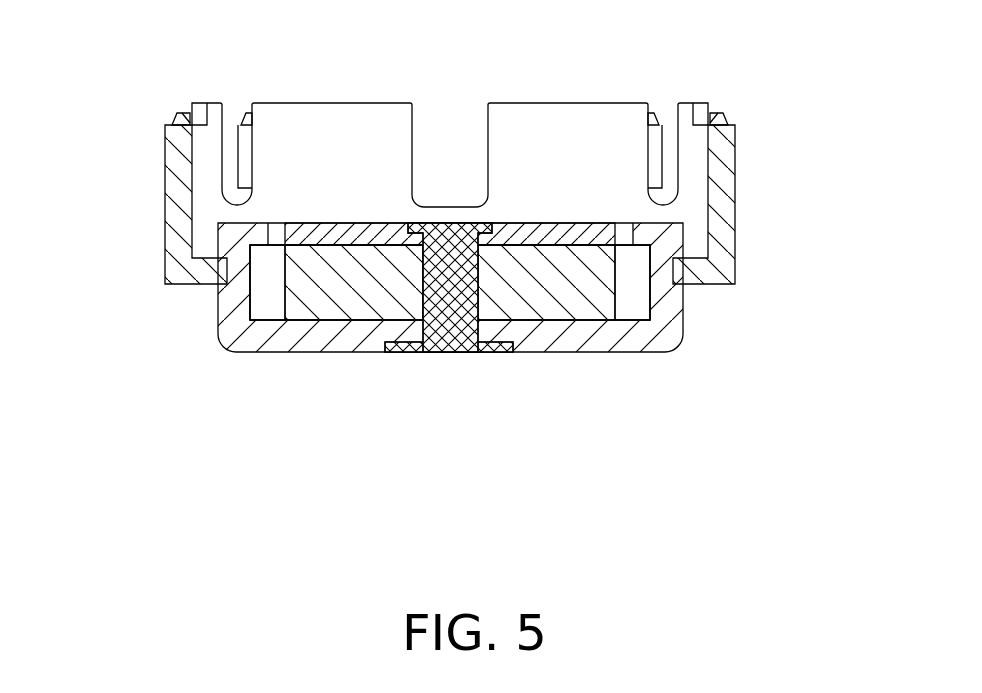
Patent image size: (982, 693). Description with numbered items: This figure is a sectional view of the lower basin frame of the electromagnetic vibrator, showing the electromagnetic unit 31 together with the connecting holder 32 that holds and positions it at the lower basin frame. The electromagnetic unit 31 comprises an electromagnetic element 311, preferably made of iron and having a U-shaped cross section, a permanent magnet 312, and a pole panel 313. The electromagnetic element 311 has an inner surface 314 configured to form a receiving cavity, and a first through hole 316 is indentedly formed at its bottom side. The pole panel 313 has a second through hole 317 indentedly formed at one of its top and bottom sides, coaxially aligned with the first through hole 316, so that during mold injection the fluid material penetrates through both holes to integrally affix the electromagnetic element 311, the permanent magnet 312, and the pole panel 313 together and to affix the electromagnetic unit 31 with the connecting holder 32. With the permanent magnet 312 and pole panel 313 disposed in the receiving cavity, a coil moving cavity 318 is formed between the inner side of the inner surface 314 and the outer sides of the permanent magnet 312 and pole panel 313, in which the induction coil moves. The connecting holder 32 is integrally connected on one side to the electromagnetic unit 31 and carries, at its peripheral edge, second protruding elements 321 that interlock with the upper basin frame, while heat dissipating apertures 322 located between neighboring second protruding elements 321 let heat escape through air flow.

The electromagnetic unit 31 is at (448, 241).
The electromagnetic element 311 is at (678, 314).
The permanent magnet 312 is at (332, 302).
The pole panel 313 is at (547, 223).
The inner surface 314 is at (248, 279).
The first through hole 316 is at (481, 353).
The second through hole 317 is at (415, 223).
The coil moving cavity 318 is at (263, 292).
The connecting holder 32 is at (461, 142).
The second protruding elements 321 is at (195, 105).
The heat dissipating apertures 322 is at (225, 187).